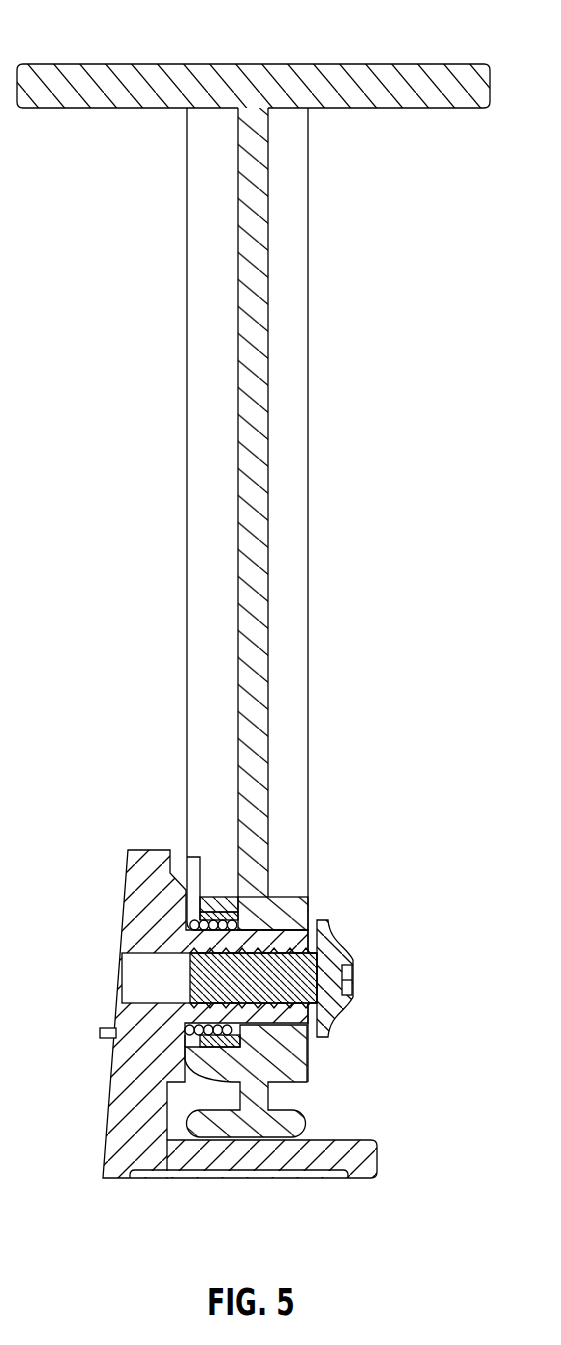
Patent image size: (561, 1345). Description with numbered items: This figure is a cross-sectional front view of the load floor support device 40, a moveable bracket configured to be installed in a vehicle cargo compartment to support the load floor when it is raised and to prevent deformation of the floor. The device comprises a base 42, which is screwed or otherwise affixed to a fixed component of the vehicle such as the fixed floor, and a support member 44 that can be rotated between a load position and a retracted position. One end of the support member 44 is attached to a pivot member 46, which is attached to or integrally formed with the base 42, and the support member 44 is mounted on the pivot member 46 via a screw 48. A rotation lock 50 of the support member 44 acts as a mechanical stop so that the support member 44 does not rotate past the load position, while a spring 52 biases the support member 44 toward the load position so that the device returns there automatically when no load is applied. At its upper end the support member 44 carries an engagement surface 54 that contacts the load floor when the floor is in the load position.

The load floor support device 40 is at (455, 41).
The base 42 is at (167, 1142).
The support member 44 is at (190, 380).
The pivot member 46 is at (127, 878).
The screw 48 is at (355, 987).
The rotation lock 50 is at (290, 1120).
The spring 52 is at (240, 926).
The engagement surface 54 is at (150, 64).